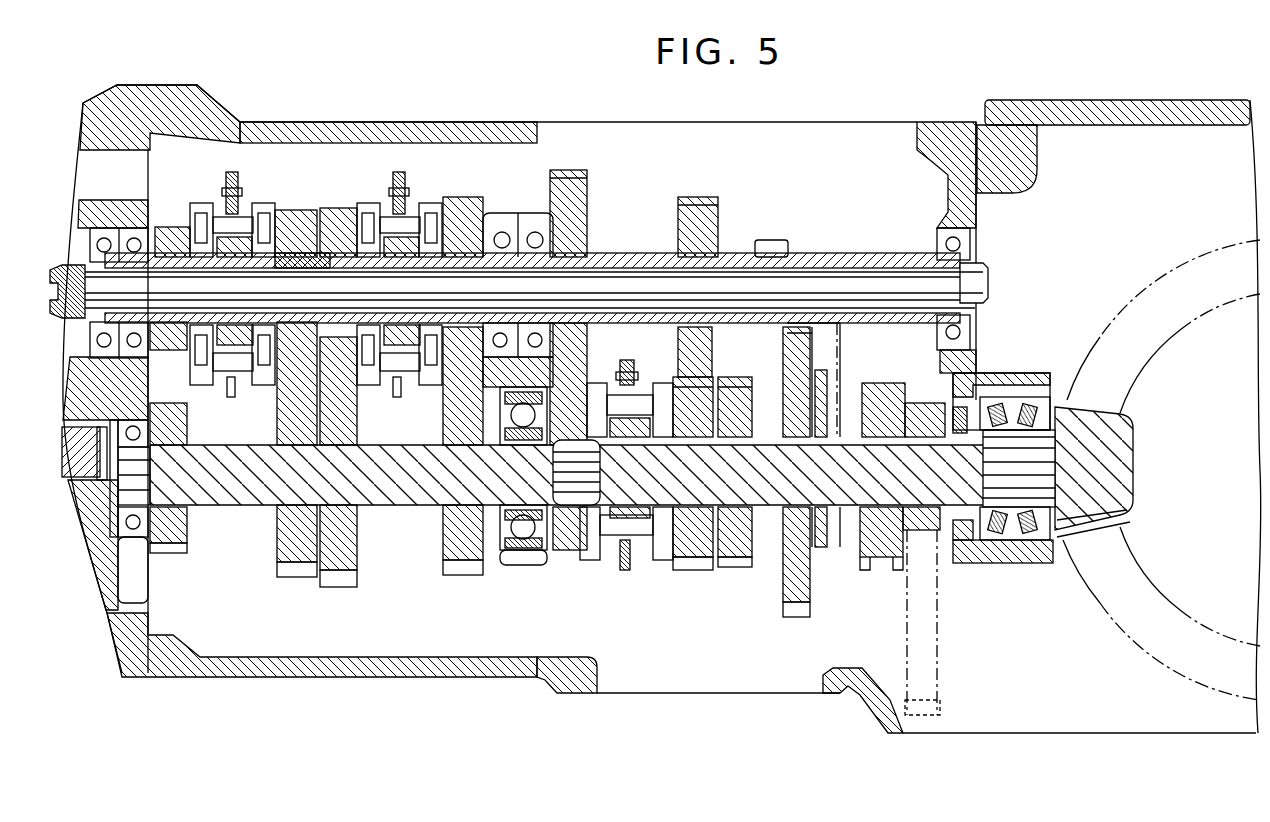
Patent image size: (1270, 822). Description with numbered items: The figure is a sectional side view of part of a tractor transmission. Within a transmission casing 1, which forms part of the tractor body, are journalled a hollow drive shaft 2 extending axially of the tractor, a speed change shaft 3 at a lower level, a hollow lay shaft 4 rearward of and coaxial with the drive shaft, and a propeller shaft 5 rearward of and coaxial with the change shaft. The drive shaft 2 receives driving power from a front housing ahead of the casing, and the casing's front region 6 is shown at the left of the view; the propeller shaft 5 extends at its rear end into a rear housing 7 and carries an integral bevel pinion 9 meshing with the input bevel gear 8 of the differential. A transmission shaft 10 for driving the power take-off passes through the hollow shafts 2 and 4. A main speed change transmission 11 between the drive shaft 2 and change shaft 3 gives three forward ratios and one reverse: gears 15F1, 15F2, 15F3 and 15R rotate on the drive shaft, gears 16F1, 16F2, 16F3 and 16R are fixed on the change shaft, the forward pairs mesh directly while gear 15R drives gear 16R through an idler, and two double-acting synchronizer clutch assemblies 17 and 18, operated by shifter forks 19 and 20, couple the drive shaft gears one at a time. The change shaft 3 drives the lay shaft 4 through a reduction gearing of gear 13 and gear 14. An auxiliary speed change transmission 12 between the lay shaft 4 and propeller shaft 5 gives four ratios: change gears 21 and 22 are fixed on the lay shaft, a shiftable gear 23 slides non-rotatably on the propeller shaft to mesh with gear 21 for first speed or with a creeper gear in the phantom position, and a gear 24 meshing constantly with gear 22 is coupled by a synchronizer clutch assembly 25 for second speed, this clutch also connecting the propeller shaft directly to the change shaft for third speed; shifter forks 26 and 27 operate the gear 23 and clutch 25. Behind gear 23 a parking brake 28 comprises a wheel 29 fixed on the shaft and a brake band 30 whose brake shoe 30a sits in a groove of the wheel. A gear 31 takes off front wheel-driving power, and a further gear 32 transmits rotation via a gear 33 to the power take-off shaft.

The transmission casing 1 is at (428, 665).
The hollow drive shaft 2 is at (303, 252).
The speed change shaft 3 is at (250, 483).
The hollow lay shaft 4 is at (840, 258).
The propeller shaft 5 is at (767, 490).
The rear case wall 6 is at (120, 104).
The rear housing 7 is at (1125, 692).
The input bevel gear 8 is at (1190, 642).
The bevel pinion 9 is at (1092, 516).
The transmission shaft 10 is at (615, 285).
The main speed change transmission 11 is at (376, 584).
The auxiliary speed change transmission 12 is at (695, 600).
The gear 13 is at (568, 552).
The gear 14 is at (565, 175).
The gear 15R is at (186, 228).
The gear 15F1 is at (341, 210).
The gear 15F2 is at (283, 210).
The gear 15F3 is at (465, 198).
The gear 16R is at (170, 547).
The gear 16F1 is at (330, 587).
The gear 16F2 is at (290, 578).
The gear 16F3 is at (462, 575).
The double-acting synchronizer clutch assembly 17 is at (243, 382).
The double-acting synchronizer clutch assembly 18 is at (383, 385).
The shifter fork 19 is at (232, 172).
The shifter fork 20 is at (398, 172).
The change gear 21 is at (772, 242).
The change gear 22 is at (700, 200).
The shiftable gear 23 is at (805, 614).
The gear 24 is at (690, 572).
The double-acting synchronizer clutch assembly 25 is at (620, 570).
The shifter fork 26 is at (827, 378).
The shifter fork 27 is at (632, 393).
The parking brake 28 is at (917, 386).
The wheel 29 is at (878, 550).
The brake band 30 is at (988, 275).
The brake shoe 30a is at (872, 437).
The gear 31 is at (740, 557).
The gear 32 is at (985, 380).
The gear 33 is at (937, 717).